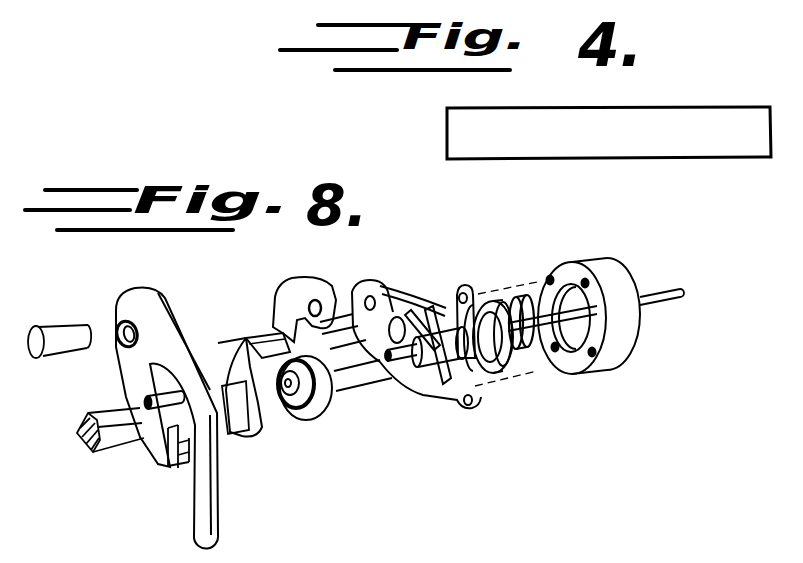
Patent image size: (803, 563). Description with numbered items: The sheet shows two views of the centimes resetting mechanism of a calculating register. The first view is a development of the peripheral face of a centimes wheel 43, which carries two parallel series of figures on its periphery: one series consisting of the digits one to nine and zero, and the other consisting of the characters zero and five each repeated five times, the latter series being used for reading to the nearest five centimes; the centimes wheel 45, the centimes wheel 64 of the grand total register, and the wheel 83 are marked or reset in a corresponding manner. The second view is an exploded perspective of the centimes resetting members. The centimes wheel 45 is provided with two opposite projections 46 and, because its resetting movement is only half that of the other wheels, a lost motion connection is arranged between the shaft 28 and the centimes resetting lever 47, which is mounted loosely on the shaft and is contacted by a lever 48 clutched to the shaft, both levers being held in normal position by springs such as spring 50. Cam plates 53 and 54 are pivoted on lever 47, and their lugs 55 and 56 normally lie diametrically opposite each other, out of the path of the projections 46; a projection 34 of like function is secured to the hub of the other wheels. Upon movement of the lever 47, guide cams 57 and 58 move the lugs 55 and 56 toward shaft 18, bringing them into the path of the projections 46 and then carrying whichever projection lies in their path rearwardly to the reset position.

In FIG. 8, the shaft 18 is at (163, 405).
In FIG. 8, the shaft 28 is at (120, 440).
In FIG. 8, the projection 34 is at (527, 300).
In FIG. 4, the centimes wheel 43 is at (608, 151).
In FIG. 4, the centimes wheel 45 is at (693, 155).
In FIG. 8, the centimes wheel 45 is at (607, 362).
In FIG. 8, the projections 46 is at (418, 312).
In FIG. 8, the centimes resetting lever 47 is at (303, 296).
In FIG. 8, the lever 48 is at (304, 380).
In FIG. 8, the spring 50 is at (284, 337).
In FIG. 8, the cam plate 53 is at (478, 379).
In FIG. 8, the cam plate 54 is at (200, 417).
In FIG. 8, the lug 55 is at (447, 320).
In FIG. 8, the lug 56 is at (185, 462).
In FIG. 8, the guide cam 57 is at (488, 365).
In FIG. 8, the guide cam 58 is at (192, 477).
In FIG. 4, the centimes wheel 64 is at (675, 202).
In FIG. 4, the wheel 83 is at (737, 202).